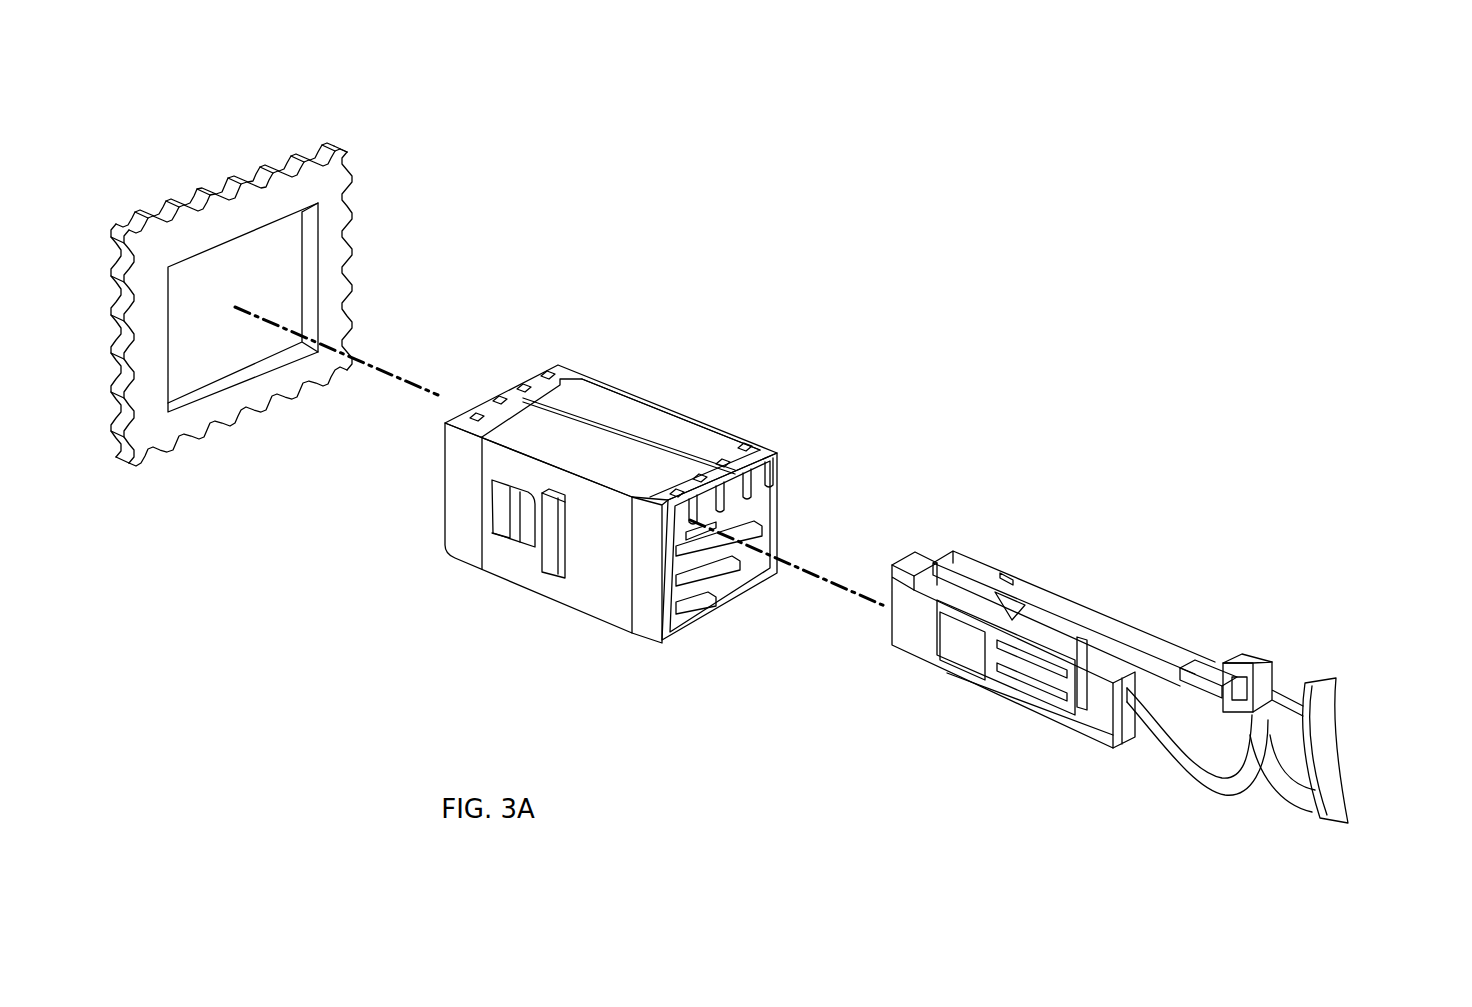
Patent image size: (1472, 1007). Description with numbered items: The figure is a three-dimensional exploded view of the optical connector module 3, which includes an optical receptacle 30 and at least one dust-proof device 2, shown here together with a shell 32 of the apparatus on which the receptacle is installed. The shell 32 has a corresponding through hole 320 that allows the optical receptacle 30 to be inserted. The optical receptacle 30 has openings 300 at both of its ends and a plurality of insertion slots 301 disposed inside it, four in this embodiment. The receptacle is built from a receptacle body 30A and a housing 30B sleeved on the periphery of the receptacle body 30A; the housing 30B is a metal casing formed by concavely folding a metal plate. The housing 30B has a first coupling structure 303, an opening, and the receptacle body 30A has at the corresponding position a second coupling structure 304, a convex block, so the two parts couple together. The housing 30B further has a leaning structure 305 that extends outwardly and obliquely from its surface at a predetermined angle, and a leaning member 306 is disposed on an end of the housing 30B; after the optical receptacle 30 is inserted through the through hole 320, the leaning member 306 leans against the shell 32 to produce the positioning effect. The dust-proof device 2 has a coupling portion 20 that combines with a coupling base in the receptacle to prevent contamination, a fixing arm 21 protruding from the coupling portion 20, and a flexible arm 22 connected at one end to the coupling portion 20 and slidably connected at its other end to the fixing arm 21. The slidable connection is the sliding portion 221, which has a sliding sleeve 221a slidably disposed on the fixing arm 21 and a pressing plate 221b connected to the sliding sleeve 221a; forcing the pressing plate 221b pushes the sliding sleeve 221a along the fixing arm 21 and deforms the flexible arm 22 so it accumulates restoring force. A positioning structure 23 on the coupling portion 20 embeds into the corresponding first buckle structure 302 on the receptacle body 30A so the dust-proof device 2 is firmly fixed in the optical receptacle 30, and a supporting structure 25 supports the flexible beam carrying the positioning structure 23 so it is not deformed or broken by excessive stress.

The optical connector module 3 is at (150, 135).
The shell 32 is at (345, 150).
The through hole 320 is at (285, 248).
The optical receptacle 30 is at (752, 432).
The receptacle body 30A is at (573, 377).
The housing 30B is at (650, 415).
The first buckle structure 302 is at (673, 500).
The openings 300 is at (762, 510).
The insertion slots 301 is at (680, 615).
The first coupling structure 303 is at (565, 575).
The second coupling structure 304 is at (552, 548).
The leaning structure 305 is at (507, 523).
The leaning member 306 is at (523, 537).
The dust-proof device 2 is at (1070, 590).
The coupling portion 20 is at (918, 662).
The fixing arm 21 is at (1198, 661).
The flexible arm 22 is at (1168, 752).
The positioning structure 23 is at (1003, 580).
The supporting structure 25 is at (1007, 607).
The sliding portion 221 is at (1440, 603).
The sliding sleeve 221a is at (1268, 655).
The pressing plate 221b is at (1325, 720).